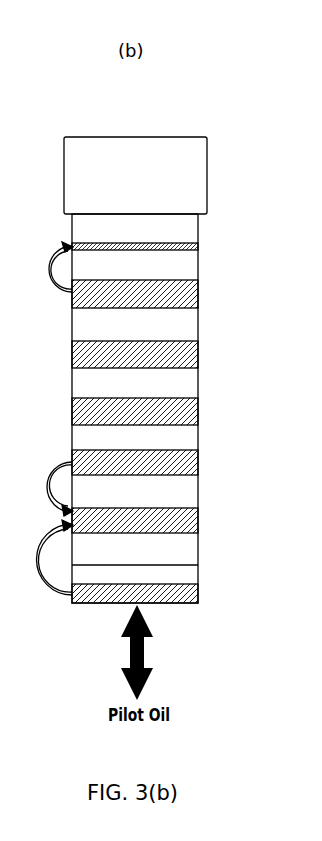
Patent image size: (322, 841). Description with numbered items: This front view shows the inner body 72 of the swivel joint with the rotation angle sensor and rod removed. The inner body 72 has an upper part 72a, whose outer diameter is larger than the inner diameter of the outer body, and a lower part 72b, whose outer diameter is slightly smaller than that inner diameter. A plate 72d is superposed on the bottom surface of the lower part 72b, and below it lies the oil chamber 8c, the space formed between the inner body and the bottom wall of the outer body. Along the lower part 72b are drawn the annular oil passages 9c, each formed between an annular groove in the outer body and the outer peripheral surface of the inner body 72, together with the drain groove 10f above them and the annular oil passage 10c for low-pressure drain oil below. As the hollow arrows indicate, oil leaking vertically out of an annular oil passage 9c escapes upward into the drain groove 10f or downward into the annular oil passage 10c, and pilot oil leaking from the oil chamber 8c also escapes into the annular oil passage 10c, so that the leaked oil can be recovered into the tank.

The inner body 72 is at (188, 339).
The upper part 72a is at (221, 165).
The lower part 72b is at (228, 380).
The plate 72d is at (199, 566).
The drain groove 10f is at (199, 247).
The annular oil passage 9c is at (199, 295).
The annular oil passage 10c is at (199, 519).
The oil chamber 8c is at (199, 594).